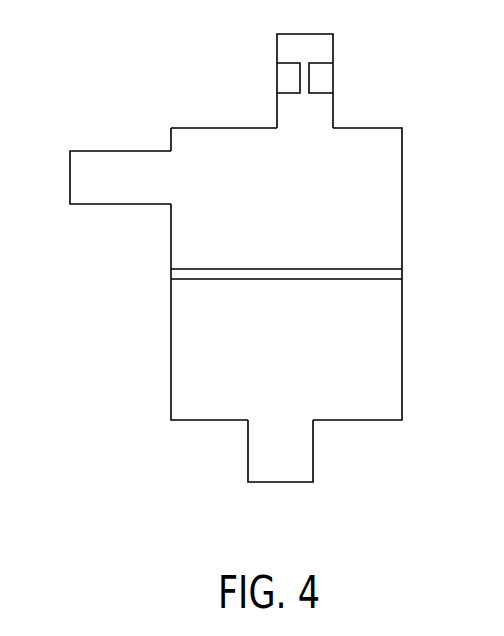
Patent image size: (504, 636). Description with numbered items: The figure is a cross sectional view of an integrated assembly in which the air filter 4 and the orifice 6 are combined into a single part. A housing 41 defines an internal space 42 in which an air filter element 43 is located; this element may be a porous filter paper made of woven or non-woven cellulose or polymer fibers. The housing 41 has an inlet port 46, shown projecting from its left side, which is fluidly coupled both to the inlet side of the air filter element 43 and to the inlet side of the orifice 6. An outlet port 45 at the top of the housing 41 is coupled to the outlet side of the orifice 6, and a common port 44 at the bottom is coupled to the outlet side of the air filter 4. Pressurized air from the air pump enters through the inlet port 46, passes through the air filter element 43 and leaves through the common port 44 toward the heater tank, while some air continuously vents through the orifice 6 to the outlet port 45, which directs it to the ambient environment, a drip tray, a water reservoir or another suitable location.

The air filter 4 is at (92, 357).
The orifice 6 is at (320, 77).
The housing 41 is at (403, 350).
The internal space 42 is at (206, 375).
The air filter element 43 is at (360, 275).
The common port 44 is at (313, 450).
The outlet port 45 is at (275, 43).
The inlet port 46 is at (118, 150).